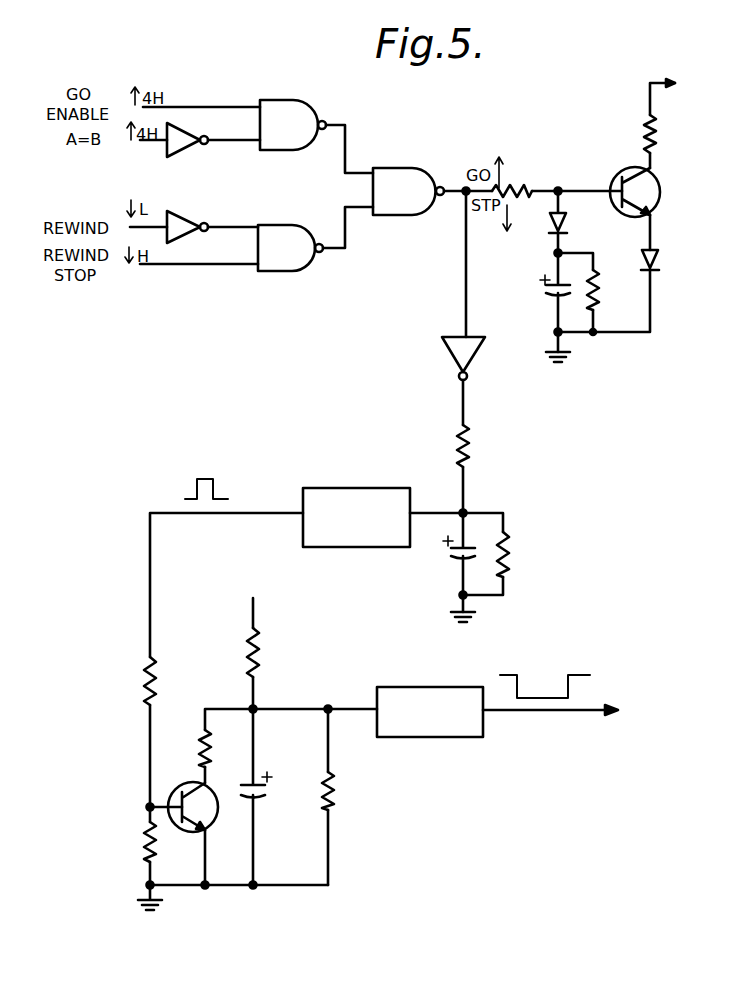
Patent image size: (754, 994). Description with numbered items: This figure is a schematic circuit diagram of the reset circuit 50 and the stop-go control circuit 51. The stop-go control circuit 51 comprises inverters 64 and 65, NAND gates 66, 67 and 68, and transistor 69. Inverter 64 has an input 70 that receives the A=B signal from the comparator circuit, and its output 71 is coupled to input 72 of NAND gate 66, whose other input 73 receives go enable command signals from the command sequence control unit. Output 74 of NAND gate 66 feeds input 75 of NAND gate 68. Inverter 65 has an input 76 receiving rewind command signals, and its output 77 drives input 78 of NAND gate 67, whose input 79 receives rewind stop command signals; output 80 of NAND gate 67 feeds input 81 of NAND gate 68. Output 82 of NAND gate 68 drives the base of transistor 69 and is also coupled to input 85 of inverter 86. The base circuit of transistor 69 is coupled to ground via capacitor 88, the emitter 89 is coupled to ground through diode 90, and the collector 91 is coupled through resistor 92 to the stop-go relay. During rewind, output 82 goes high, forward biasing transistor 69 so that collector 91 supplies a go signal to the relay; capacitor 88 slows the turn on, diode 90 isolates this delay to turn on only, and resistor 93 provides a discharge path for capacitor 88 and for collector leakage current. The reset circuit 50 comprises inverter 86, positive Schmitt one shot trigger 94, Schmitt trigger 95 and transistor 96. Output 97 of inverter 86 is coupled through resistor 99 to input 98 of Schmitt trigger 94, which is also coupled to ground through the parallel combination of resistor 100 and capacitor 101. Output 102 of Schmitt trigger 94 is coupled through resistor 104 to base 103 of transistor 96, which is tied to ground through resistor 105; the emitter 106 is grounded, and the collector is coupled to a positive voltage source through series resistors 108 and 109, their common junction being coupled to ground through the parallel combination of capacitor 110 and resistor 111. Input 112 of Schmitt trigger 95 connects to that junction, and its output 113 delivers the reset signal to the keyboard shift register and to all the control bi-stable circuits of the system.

The reset circuit 50 is at (518, 638).
The stop-go control circuit 51 is at (386, 139).
The inverter 64 is at (181, 150).
The inverter 65 is at (179, 238).
The NAND gate 66 is at (289, 100).
The NAND gate 67 is at (286, 272).
The NAND gate 68 is at (413, 206).
The transistor 69 is at (660, 201).
The input 70 is at (152, 143).
The output 71 is at (221, 145).
The input 72 is at (256, 150).
The input 73 is at (250, 106).
The output 74 is at (323, 140).
The input 75 is at (365, 177).
The input 76 is at (160, 240).
The output 77 is at (206, 222).
The input 78 is at (256, 232).
The input 79 is at (255, 275).
The output 80 is at (318, 256).
The input 81 is at (369, 216).
The output 82 is at (444, 198).
The input 85 is at (468, 330).
The inverter 86 is at (472, 352).
The capacitor 88 is at (548, 290).
The emitter 89 is at (652, 225).
The diode 90 is at (652, 281).
The collector 91 is at (655, 165).
The resistor 92 is at (655, 133).
The resistor 93 is at (599, 302).
The positive Schmitt one shot trigger 94 is at (344, 488).
The Schmitt trigger 95 is at (438, 737).
The transistor 96 is at (203, 822).
The output 97 is at (466, 382).
The input 98 is at (414, 513).
The resistor 99 is at (468, 437).
The resistor 100 is at (510, 561).
The capacitor 101 is at (445, 556).
The output 102 is at (300, 511).
The base 103 is at (180, 795).
The resistor 104 is at (145, 680).
The resistor 105 is at (143, 855).
The emitter 106 is at (205, 834).
The resistor 108 is at (205, 740).
The resistor 109 is at (250, 658).
The capacitor 110 is at (268, 795).
The resistor 111 is at (336, 792).
The input 112 is at (372, 705).
The output 113 is at (500, 713).